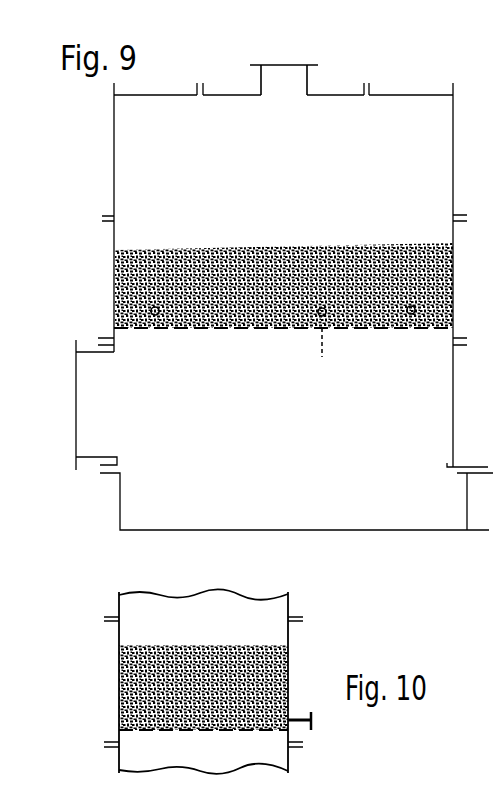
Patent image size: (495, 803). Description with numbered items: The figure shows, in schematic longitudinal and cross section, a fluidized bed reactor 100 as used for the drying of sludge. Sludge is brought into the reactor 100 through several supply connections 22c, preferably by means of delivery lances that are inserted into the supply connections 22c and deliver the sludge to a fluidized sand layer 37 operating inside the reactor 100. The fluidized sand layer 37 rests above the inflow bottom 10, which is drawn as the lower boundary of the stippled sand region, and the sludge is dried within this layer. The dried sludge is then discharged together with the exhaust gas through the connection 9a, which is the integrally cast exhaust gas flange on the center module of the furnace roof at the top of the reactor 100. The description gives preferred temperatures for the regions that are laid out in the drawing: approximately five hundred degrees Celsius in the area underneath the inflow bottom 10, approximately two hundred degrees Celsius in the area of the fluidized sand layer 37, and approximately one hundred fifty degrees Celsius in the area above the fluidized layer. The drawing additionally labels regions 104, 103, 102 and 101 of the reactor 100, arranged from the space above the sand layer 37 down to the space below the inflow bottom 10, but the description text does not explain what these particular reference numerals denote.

In FIG. 9, the fluidized bed reactor 100 is at (109, 202).
In FIG. 9, the exhaust gas flange 9a is at (268, 82).
In FIG. 9, the upper chamber 104 is at (288, 168).
In FIG. 9, the partition 103 is at (133, 236).
In FIG. 9, the fluidized sand layer 37 is at (122, 287).
In FIG. 10, the fluidized sand layer 37 is at (138, 690).
In FIG. 9, the inflow bottom 10 is at (392, 328).
In FIG. 10, the inflow bottom 10 is at (142, 730).
In FIG. 9, the supply connections 22c is at (327, 355).
In FIG. 10, the supply connections 22c is at (303, 718).
In FIG. 9, the middle chamber 102 is at (282, 411).
In FIG. 9, the lower chamber 101 is at (282, 514).